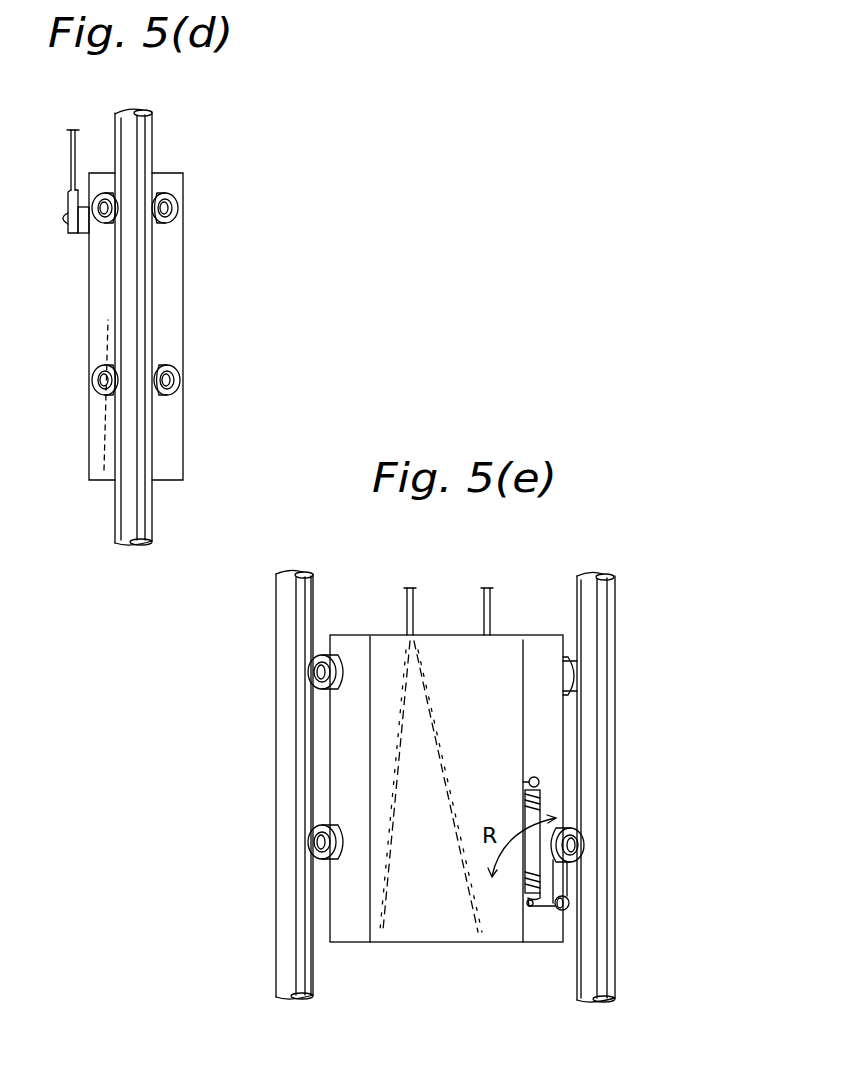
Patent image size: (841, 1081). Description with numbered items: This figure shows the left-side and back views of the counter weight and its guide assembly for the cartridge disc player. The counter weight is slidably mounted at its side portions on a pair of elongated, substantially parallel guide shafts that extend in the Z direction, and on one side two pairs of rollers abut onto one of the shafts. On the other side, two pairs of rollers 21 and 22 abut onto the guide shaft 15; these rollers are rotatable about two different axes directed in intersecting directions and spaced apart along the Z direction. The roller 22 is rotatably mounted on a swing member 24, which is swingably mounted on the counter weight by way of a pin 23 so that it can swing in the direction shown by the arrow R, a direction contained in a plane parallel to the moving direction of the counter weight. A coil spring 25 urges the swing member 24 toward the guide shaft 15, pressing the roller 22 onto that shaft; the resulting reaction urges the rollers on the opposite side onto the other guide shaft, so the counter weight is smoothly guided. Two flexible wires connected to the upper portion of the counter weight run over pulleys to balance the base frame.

The guide shaft 15 is at (582, 990).
The rollers 21 is at (572, 677).
The roller 22 is at (585, 850).
The pin 23 is at (569, 906).
The swing member 24 is at (563, 880).
The coil spring 25 is at (541, 800).